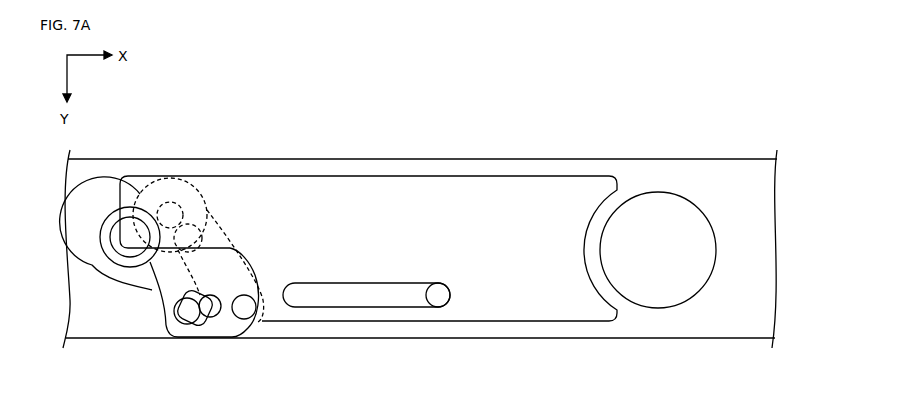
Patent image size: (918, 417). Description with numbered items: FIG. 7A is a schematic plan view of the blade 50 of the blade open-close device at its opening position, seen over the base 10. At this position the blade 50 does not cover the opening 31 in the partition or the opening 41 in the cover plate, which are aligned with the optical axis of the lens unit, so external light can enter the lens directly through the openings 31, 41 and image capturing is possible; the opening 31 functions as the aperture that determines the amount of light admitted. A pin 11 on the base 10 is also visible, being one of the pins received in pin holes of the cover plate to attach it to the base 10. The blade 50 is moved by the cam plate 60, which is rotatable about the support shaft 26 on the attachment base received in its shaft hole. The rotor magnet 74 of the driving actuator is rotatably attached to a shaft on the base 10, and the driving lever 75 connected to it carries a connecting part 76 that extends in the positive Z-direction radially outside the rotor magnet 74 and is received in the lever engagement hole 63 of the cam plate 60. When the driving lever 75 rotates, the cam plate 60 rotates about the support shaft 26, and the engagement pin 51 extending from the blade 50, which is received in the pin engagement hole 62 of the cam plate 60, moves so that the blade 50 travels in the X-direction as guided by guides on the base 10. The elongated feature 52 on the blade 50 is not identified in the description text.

The base 10 is at (607, 339).
The blade 50 is at (433, 176).
The opening 31 is at (658, 208).
The opening 41 is at (657, 192).
The elongated slot 52 is at (342, 307).
The pin 11 is at (438, 297).
The support shaft 26 is at (247, 318).
The cam plate 60 is at (212, 332).
The lever engagement hole 63 is at (223, 322).
The connecting part 76 is at (187, 313).
The driving lever 75 is at (128, 285).
The rotor magnet 74 is at (175, 337).
The engagement pin 51 is at (178, 180).
The pin engagement hole 62 is at (213, 190).